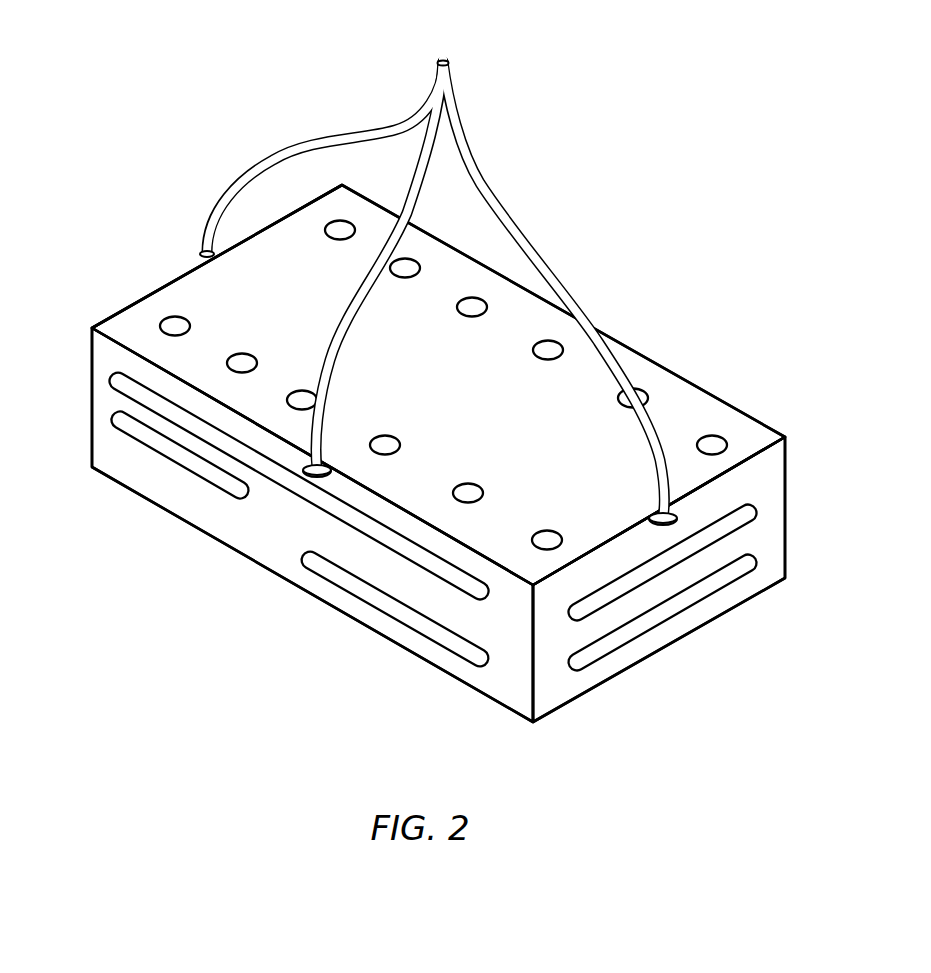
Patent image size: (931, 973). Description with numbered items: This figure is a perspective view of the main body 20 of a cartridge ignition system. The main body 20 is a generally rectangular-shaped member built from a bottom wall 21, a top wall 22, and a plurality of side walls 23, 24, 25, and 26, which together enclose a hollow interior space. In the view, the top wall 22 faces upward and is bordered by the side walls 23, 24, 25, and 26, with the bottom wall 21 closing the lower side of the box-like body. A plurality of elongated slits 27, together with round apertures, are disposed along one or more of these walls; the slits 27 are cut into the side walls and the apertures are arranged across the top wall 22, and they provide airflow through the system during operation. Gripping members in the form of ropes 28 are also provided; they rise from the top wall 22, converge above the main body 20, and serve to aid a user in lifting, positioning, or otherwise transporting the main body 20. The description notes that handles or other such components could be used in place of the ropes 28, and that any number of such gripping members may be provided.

The main body 20 is at (140, 107).
The bottom wall 21 is at (233, 552).
The top wall 22 is at (541, 457).
The side wall 23 is at (197, 505).
The side wall 24 is at (680, 378).
The side wall 25 is at (153, 288).
The side wall 26 is at (660, 640).
The elongated slits 27 is at (307, 398).
The ropes 28 is at (332, 145).